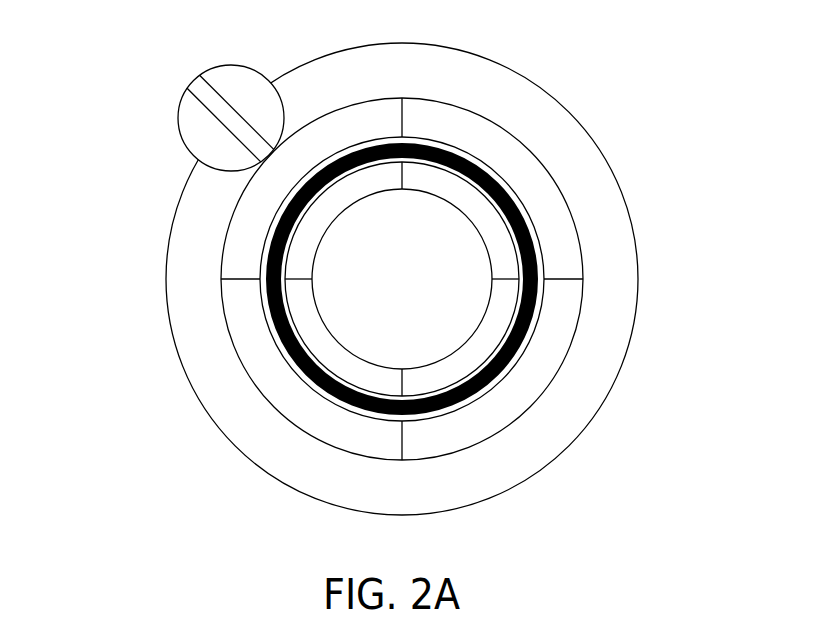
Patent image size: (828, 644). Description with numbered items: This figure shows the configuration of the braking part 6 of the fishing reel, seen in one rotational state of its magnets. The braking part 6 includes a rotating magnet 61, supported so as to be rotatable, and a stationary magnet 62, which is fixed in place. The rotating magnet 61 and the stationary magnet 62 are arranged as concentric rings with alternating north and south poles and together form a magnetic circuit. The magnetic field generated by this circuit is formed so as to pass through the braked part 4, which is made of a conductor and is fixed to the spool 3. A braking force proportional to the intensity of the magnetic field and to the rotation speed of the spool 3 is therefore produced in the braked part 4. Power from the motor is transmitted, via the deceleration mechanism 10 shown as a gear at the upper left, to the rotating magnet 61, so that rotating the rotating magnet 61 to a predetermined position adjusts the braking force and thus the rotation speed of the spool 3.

The spool 3 is at (557, 420).
The braked part 4 is at (530, 308).
The braking part 6 is at (321, 279).
The rotating magnet 61 is at (232, 305).
The stationary magnet 62 is at (298, 313).
The deceleration mechanism 10 is at (196, 144).